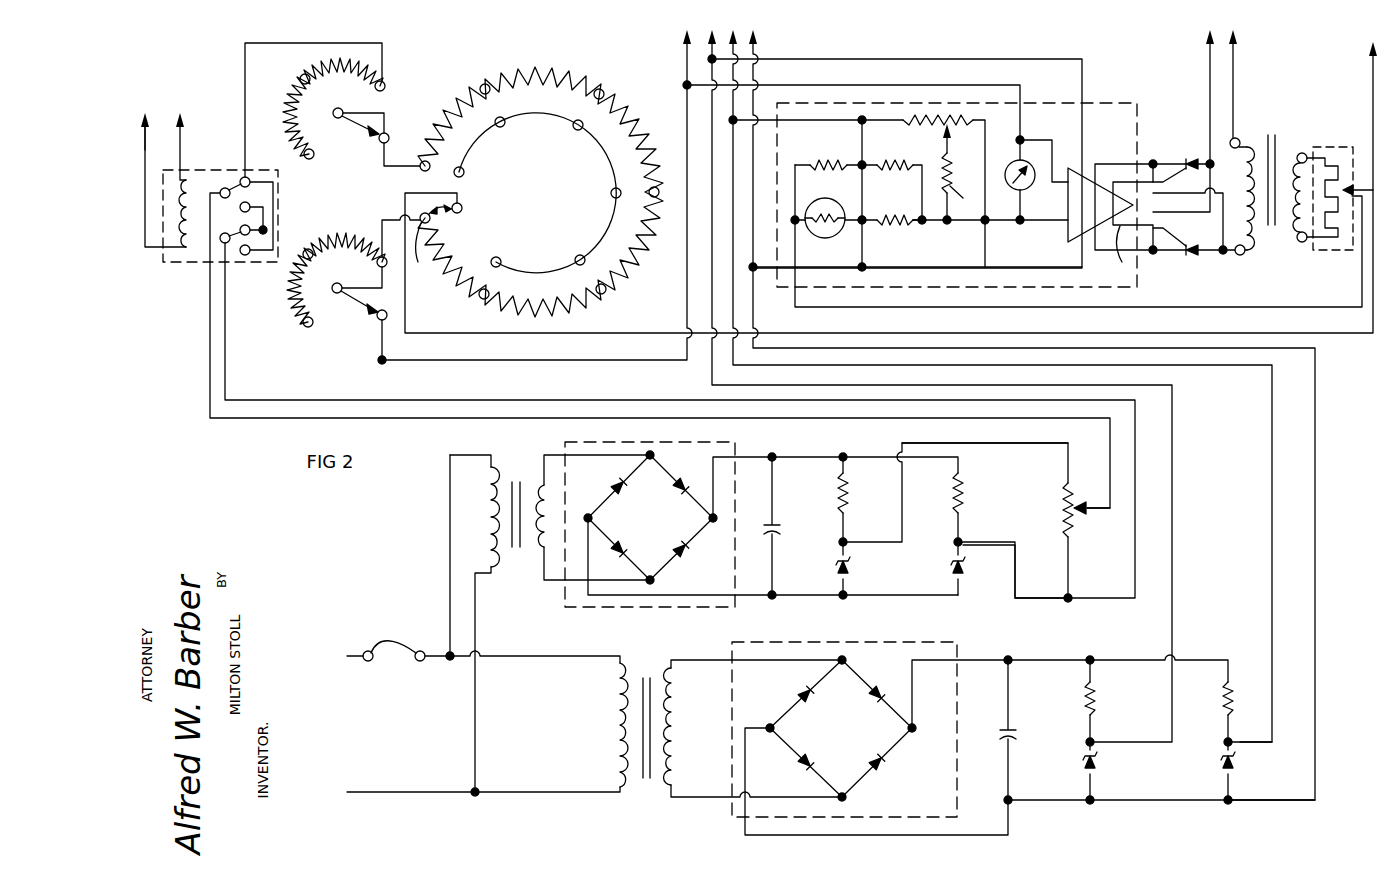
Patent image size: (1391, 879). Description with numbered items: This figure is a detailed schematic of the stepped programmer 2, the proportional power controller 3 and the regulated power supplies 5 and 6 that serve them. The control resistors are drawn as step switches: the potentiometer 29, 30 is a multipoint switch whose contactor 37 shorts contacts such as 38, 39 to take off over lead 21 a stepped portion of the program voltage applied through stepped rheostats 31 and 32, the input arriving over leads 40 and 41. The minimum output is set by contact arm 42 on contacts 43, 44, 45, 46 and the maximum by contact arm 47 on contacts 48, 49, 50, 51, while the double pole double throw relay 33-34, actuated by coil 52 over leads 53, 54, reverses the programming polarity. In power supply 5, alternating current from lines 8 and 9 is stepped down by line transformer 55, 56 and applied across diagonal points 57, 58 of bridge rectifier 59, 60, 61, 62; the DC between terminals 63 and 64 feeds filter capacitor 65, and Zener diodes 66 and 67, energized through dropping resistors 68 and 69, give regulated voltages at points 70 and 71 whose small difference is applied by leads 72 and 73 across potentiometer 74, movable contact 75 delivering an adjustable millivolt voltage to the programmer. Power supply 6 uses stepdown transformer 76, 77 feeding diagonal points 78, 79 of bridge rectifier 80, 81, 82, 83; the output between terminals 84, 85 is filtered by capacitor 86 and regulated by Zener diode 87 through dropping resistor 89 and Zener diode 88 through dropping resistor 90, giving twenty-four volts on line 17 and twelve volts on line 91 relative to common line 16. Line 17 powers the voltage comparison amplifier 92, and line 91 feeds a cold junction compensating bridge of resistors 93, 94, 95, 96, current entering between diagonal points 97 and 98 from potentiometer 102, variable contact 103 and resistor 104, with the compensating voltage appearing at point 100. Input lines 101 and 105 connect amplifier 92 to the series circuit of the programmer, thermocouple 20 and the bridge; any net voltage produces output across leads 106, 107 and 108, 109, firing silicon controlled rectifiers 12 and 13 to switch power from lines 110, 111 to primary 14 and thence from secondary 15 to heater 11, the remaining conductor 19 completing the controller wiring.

The stepped programmer 2 is at (448, 47).
The proportional power controller 3 is at (933, 329).
The regulated power supply 5 is at (644, 637).
The second power supply 6 is at (608, 827).
The AC line 8 is at (495, 792).
The AC line 9 is at (522, 660).
The heater 11 is at (1330, 157).
The silicon controlled rectifier 12 is at (1188, 158).
The silicon controlled rectifier 13 is at (1192, 256).
The primary 14 is at (1255, 252).
The secondary 15 is at (1290, 245).
The common line 16 is at (885, 267).
The line 17 is at (1085, 80).
The conductor 19 is at (1205, 308).
The thermocouple 20 is at (1352, 175).
The lead 21 is at (420, 333).
The potentiometer 29 is at (558, 72).
The potentiometer 30 is at (470, 240).
The stepped rheostat 31 is at (348, 165).
The stepped rheostat 32 is at (340, 240).
The double pole double throw relay 33-34 is at (198, 170).
The contactor 37 is at (442, 220).
The contact 38 is at (421, 248).
The contact 39 is at (463, 207).
The lead 40 is at (242, 418).
The lead 41 is at (242, 400).
The contact arm 42 is at (350, 297).
The contact 43 is at (387, 320).
The contact 44 is at (303, 328).
The contact 45 is at (319, 260).
The contact 46 is at (376, 264).
The contact arm 47 is at (356, 122).
The contact 48 is at (389, 137).
The contact 49 is at (308, 160).
The contact 50 is at (300, 76).
The contact 51 is at (385, 84).
The coil 52 is at (178, 258).
The lead 53 is at (150, 128).
The lead 54 is at (185, 130).
The line transformer 55 is at (488, 578).
The line transformer 56 is at (530, 570).
The diagonal point 57 is at (650, 483).
The diagonal point 58 is at (655, 580).
The bridge rectifier 59 is at (621, 494).
The bridge rectifier 60 is at (680, 493).
The bridge rectifier 61 is at (624, 556).
The bridge rectifier 62 is at (678, 553).
The terminal 63 is at (586, 514).
The terminal 64 is at (713, 523).
The filter capacitor 65 is at (778, 522).
The Zener diode 66 is at (850, 570).
The Zener diode 67 is at (962, 580).
The dropping resistor 68 is at (850, 488).
The dropping resistor 69 is at (965, 488).
The point 70 is at (848, 540).
The point 71 is at (963, 540).
The lead 72 is at (978, 450).
The lead 73 is at (1008, 545).
The potentiometer 74 is at (1075, 498).
The movable contact 75 is at (1100, 512).
The stepdown line transformer 76 is at (618, 735).
The stepdown line transformer 77 is at (672, 735).
The diagonal point 78 is at (848, 660).
The diagonal point 79 is at (841, 768).
The bridge rectifier 80 is at (875, 700).
The bridge rectifier 81 is at (870, 765).
The bridge rectifier 82 is at (812, 760).
The bridge rectifier 83 is at (810, 700).
The terminal 84 is at (915, 733).
The terminal 85 is at (768, 722).
The filter capacitor 86 is at (1014, 727).
The Zener diode 87 is at (1096, 768).
The Zener diode 88 is at (1236, 768).
The dropping resistor 89 is at (1098, 706).
The dropping resistor 90 is at (1222, 706).
The line 91 is at (1270, 553).
The voltage comparison amplifier 92 is at (1080, 165).
The resistor 93 is at (825, 162).
The resistor 94 is at (900, 162).
The temperature sensitive resistor 95 is at (830, 205).
The resistor 96 is at (900, 208).
The diagonal point 97 is at (866, 162).
The diagonal point 98 is at (865, 208).
The diagonal point 100 is at (792, 215).
The input line 101 is at (1022, 224).
The potentiometer 102 is at (975, 122).
The variable contact 103 is at (955, 140).
The resistor 104 is at (964, 201).
The input line 105 is at (478, 362).
The output lead 106 is at (1100, 165).
The output lead 107 is at (1125, 185).
The output lead 108 is at (1097, 252).
The output lead 109 is at (1145, 255).
The power line 110 is at (1205, 85).
The power line 111 is at (1240, 85).